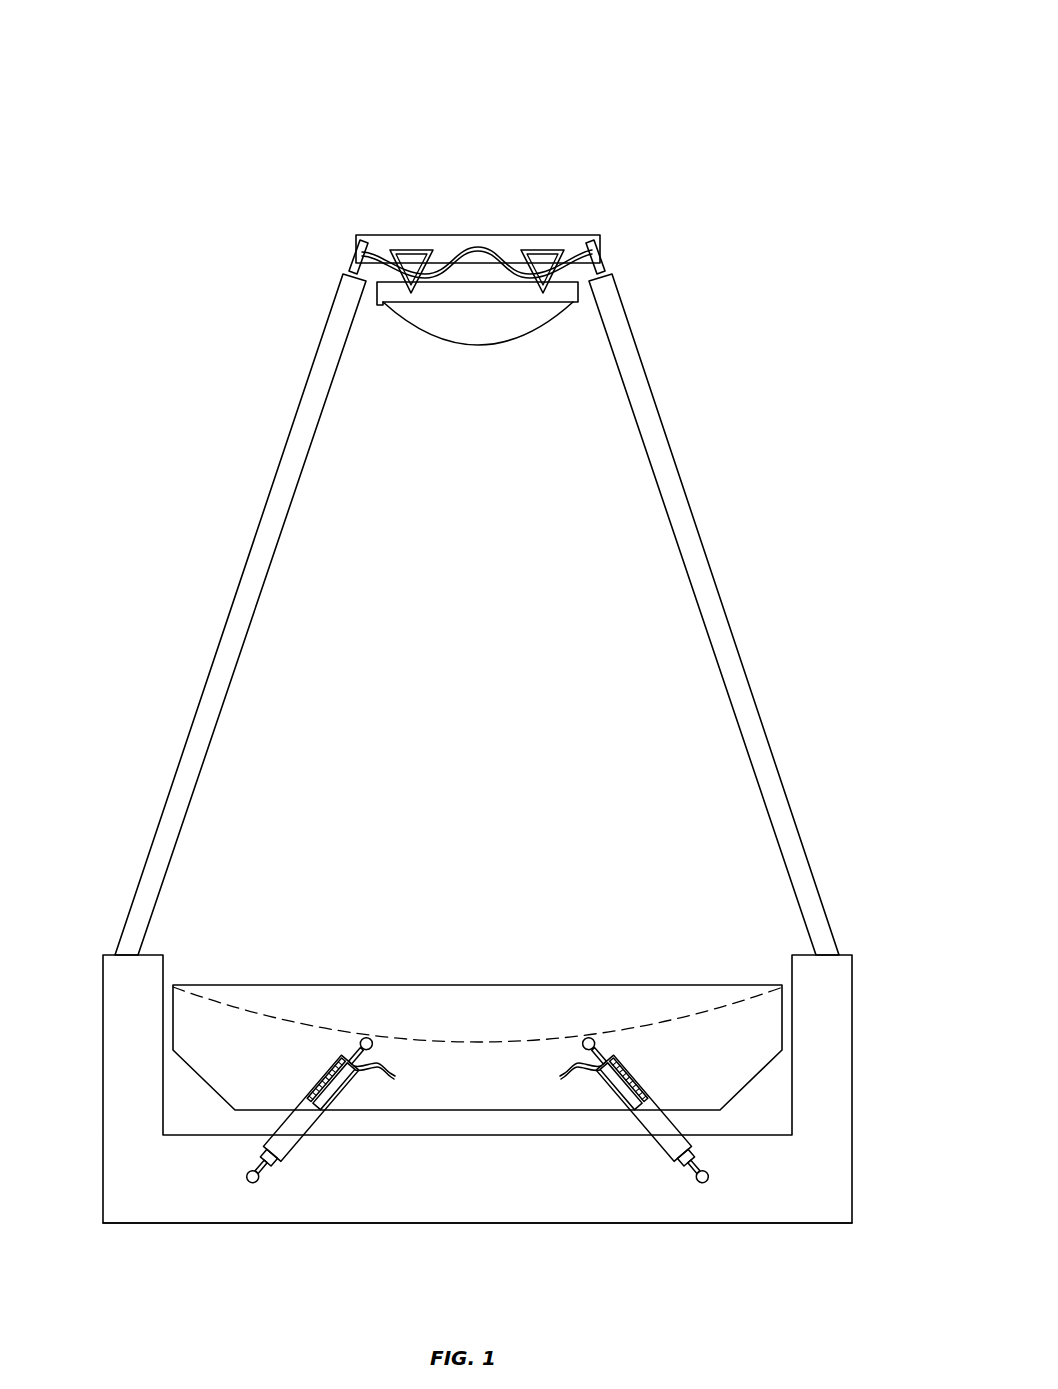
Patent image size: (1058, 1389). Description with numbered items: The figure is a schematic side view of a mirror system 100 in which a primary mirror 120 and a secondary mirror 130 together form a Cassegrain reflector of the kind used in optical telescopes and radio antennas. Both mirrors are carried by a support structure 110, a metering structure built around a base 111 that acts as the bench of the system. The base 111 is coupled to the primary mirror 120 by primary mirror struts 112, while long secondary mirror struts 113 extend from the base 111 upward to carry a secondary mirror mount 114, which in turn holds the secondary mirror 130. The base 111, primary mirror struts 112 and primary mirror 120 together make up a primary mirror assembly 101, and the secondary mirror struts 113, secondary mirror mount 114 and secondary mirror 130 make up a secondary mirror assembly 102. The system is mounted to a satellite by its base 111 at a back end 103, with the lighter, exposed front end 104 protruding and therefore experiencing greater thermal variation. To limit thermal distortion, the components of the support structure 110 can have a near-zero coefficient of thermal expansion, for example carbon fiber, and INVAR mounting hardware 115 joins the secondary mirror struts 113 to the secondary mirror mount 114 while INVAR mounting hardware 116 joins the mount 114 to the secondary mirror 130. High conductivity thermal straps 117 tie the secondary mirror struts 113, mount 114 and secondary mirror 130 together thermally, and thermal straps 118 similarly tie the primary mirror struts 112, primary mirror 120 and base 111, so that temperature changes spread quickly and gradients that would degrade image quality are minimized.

The mirror system 100 is at (281, 53).
The primary mirror assembly 101 is at (861, 1003).
The secondary mirror assembly 102 is at (679, 156).
The back end 103 is at (92, 1243).
The front end 104 is at (320, 213).
The support structure 110 is at (790, 563).
The base 111 is at (482, 1205).
The primary mirror strut 112 is at (302, 1143).
The secondary mirror strut 113 is at (220, 649).
The secondary mirror mount 114 is at (453, 236).
The mounting hardware 115 is at (350, 262).
The mounting hardware 116 is at (409, 249).
The thermal strap 117 is at (376, 246).
The thermal strap 118 is at (372, 1066).
The primary mirror 120 is at (476, 994).
The secondary mirror 130 is at (488, 332).